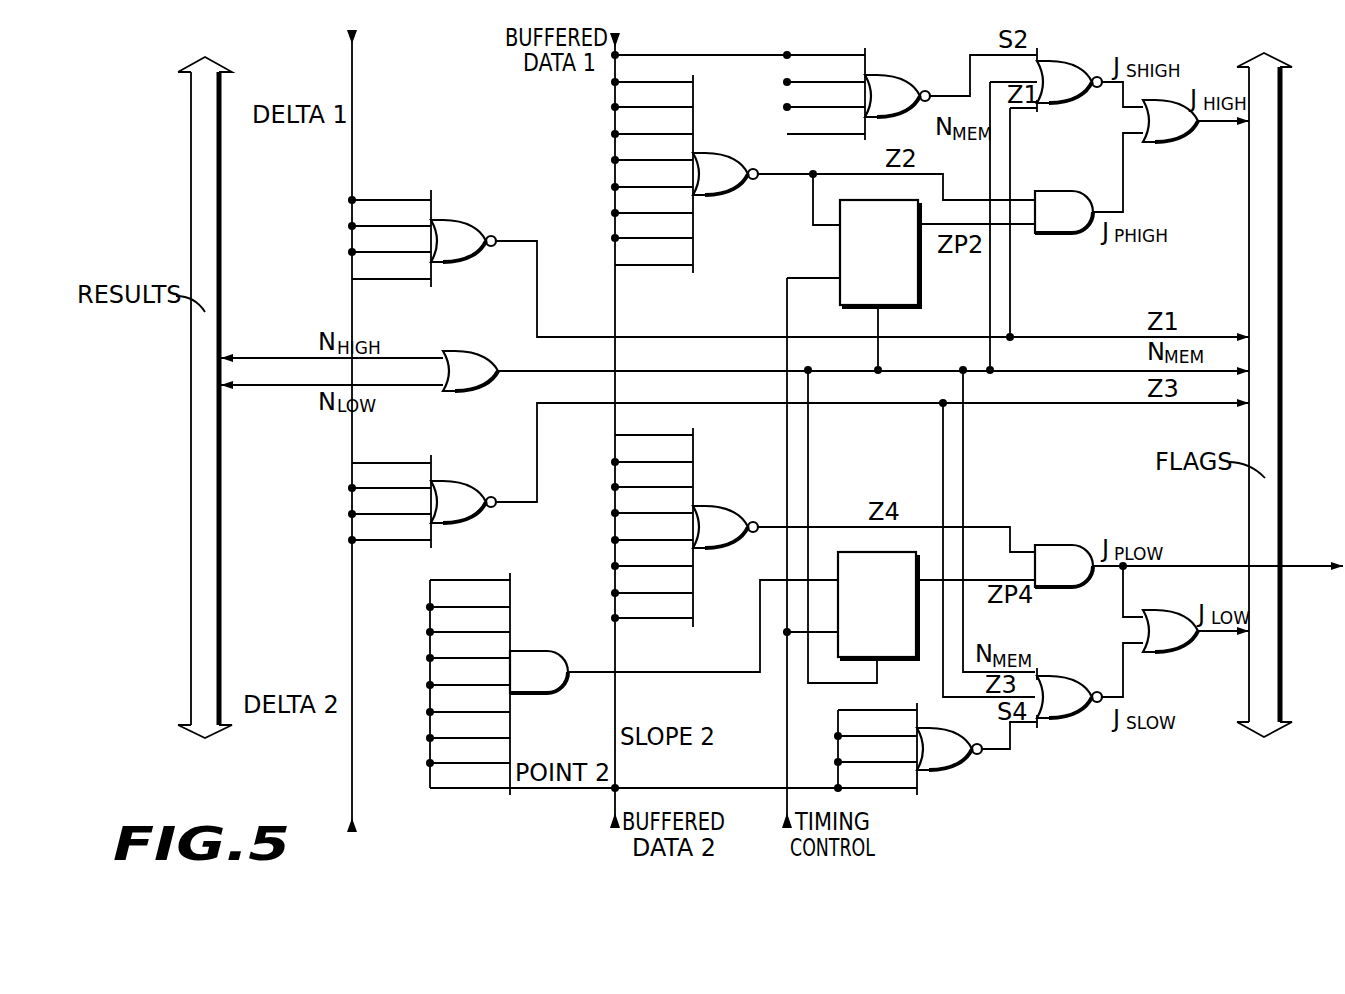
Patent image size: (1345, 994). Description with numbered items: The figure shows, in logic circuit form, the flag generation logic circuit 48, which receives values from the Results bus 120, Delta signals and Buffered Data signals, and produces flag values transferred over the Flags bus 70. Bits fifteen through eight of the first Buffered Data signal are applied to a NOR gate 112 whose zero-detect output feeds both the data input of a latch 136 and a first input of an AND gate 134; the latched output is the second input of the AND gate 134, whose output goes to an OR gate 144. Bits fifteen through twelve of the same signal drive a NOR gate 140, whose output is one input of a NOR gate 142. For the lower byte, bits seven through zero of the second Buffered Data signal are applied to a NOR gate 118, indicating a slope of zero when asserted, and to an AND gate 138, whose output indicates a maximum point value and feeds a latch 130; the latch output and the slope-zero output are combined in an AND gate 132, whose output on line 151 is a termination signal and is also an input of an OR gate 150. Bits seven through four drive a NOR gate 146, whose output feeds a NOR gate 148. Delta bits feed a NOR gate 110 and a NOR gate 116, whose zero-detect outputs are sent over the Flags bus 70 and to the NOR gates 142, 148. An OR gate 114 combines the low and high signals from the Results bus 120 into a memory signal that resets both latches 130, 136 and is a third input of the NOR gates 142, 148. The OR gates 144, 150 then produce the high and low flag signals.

The flag generation logic circuit 48 is at (146, 740).
The Flags bus 70 is at (1283, 272).
The NOR gate 110 is at (455, 221).
The NOR gate 112 is at (728, 196).
The OR gate 114 is at (460, 351).
The NOR gate 116 is at (467, 522).
The NOR gate 118 is at (720, 507).
The Results bus 120 is at (221, 614).
The latch 130 is at (905, 660).
The AND gate 132 is at (1048, 545).
The AND gate 134 is at (1060, 233).
The latch 136 is at (921, 290).
The AND gate 138 is at (532, 652).
The NOR gate 140 is at (887, 75).
The NOR gate 142 is at (1072, 104).
The OR gate 144 is at (1167, 143).
The NOR gate 146 is at (950, 772).
The NOR gate 148 is at (1072, 720).
The OR gate 150 is at (1165, 653).
The line 151 is at (1310, 564).